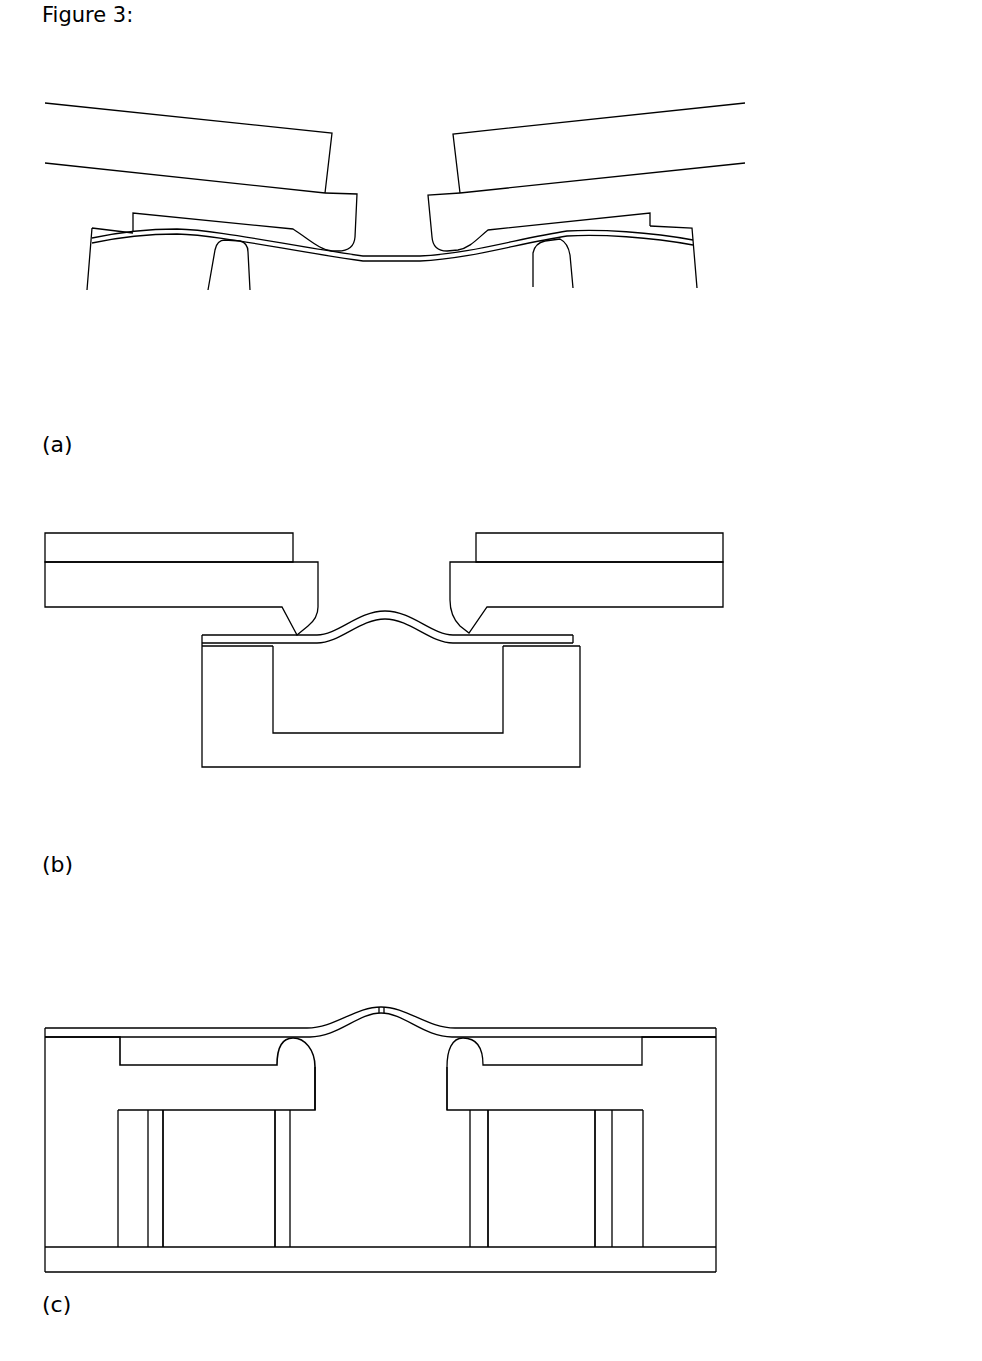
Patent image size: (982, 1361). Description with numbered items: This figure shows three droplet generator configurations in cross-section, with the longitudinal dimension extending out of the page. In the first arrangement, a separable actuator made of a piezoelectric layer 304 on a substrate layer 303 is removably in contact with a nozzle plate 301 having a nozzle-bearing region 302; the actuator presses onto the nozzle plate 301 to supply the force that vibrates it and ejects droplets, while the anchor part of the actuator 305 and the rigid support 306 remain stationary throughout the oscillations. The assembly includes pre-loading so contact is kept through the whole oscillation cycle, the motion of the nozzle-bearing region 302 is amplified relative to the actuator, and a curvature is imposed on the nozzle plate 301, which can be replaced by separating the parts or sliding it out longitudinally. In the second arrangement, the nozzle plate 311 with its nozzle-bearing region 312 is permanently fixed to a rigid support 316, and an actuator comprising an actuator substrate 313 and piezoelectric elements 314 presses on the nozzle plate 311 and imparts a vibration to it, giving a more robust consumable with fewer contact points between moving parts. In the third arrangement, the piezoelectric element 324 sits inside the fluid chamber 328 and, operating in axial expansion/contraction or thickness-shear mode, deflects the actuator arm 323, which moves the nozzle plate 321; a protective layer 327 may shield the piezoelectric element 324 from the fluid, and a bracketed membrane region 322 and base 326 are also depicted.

The nozzle plate 301 is at (627, 237).
The nozzle-bearing region 302 is at (367, 265).
The substrate layer 303 is at (613, 191).
The piezoelectric layer 304 is at (695, 137).
The anchor part of the actuator 305 is at (758, 238).
The rigid support 306 is at (552, 270).
The nozzle plate 311 is at (560, 643).
The nozzle-bearing region 312 is at (363, 632).
The actuator substrate 313 is at (613, 588).
The piezoelectric elements 314 is at (668, 545).
The rigid support 316 is at (548, 687).
The nozzle plate 321 is at (457, 992).
The membrane gap region 322 is at (407, 1000).
The actuator arm 323 is at (557, 1090).
The piezoelectric element 324 is at (553, 1195).
The base substrate 326 is at (700, 1258).
The protective layer 327 is at (480, 1137).
The fluid chamber 328 is at (397, 1068).